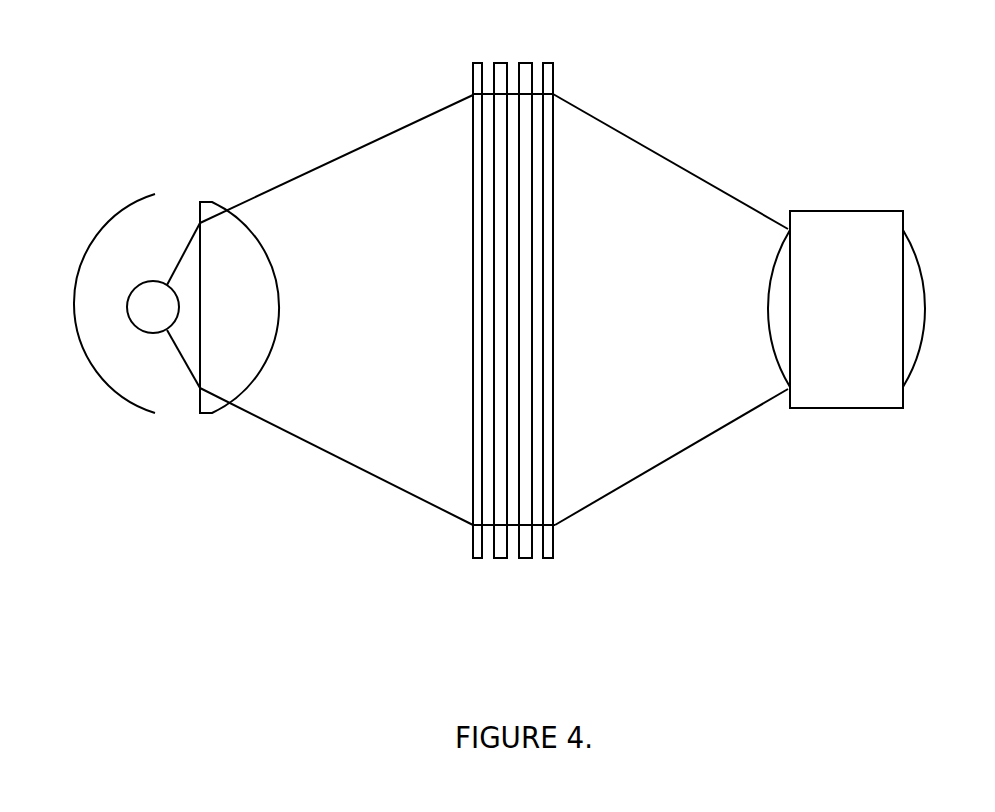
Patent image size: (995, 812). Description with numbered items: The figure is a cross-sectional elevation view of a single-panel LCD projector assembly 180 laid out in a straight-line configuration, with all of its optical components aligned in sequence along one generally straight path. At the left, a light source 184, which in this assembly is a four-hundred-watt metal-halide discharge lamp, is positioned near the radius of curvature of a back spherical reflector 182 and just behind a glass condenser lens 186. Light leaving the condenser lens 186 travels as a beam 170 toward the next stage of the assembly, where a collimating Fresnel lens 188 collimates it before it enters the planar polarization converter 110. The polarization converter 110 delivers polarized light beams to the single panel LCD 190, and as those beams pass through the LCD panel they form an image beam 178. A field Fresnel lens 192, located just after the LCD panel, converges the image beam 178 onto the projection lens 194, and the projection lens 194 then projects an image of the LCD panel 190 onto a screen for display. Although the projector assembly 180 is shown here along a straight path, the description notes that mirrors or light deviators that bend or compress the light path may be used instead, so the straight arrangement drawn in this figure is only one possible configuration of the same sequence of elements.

The projector assembly 180 is at (513, 318).
The incident light beam 170 is at (340, 221).
The image beam 178 is at (690, 224).
The back spherical reflector 182 is at (82, 390).
The light source 184 is at (145, 350).
The condenser lens 186 is at (227, 415).
The collimating Fresnel lens 188 is at (474, 568).
The polarization converter 110 is at (500, 571).
The single panel LCD 190 is at (530, 571).
The field Fresnel lens 192 is at (559, 568).
The projection lens 194 is at (840, 405).